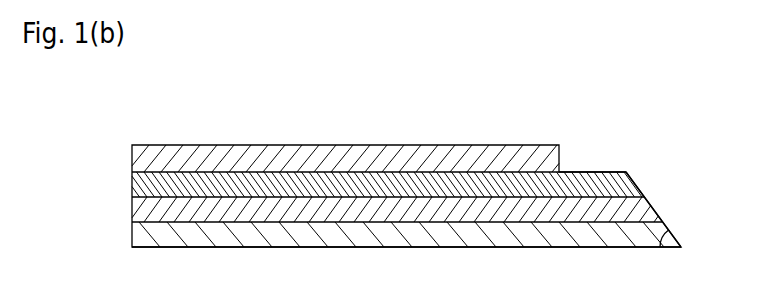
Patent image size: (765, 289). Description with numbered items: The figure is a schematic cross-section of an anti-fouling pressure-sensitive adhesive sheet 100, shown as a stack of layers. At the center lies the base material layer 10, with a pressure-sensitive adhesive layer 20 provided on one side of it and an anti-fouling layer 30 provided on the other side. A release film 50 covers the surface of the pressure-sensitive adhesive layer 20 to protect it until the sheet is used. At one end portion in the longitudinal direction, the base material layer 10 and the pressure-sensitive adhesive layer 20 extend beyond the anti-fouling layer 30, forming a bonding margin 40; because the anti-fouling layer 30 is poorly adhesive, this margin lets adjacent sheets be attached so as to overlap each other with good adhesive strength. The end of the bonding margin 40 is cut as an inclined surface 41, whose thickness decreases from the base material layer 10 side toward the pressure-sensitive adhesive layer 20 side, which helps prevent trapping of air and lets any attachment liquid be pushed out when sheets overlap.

The anti-fouling pressure-sensitive adhesive sheet 100 is at (576, 63).
The anti-fouling layer 30 is at (132, 162).
The base material layer 10 is at (132, 190).
The pressure-sensitive adhesive layer 20 is at (132, 209).
The release film 50 is at (132, 236).
The bonding margin 40 is at (589, 172).
The inclined surface 41 is at (645, 198).